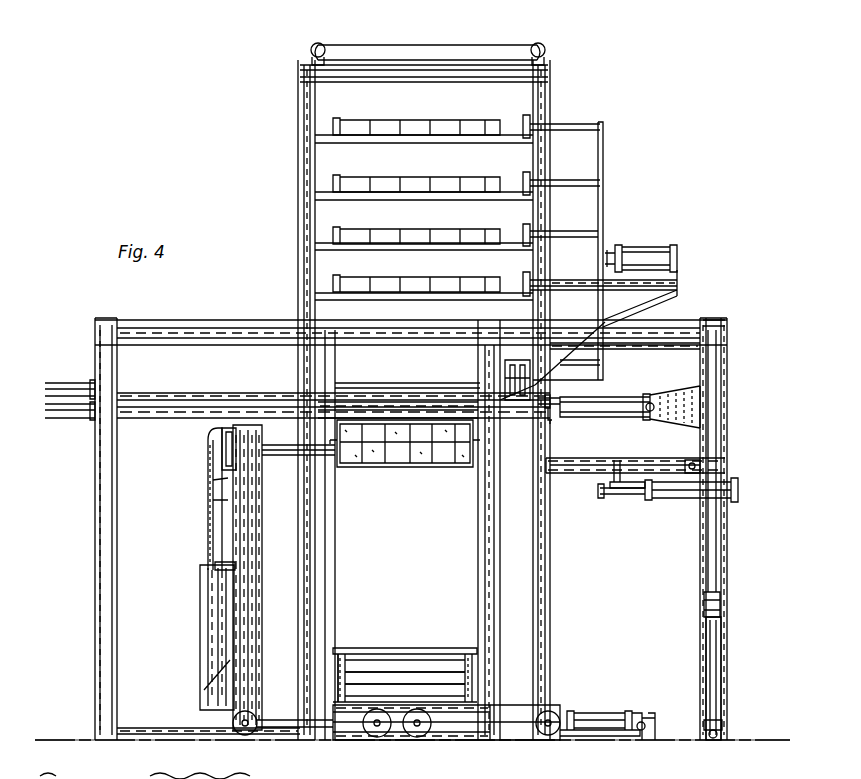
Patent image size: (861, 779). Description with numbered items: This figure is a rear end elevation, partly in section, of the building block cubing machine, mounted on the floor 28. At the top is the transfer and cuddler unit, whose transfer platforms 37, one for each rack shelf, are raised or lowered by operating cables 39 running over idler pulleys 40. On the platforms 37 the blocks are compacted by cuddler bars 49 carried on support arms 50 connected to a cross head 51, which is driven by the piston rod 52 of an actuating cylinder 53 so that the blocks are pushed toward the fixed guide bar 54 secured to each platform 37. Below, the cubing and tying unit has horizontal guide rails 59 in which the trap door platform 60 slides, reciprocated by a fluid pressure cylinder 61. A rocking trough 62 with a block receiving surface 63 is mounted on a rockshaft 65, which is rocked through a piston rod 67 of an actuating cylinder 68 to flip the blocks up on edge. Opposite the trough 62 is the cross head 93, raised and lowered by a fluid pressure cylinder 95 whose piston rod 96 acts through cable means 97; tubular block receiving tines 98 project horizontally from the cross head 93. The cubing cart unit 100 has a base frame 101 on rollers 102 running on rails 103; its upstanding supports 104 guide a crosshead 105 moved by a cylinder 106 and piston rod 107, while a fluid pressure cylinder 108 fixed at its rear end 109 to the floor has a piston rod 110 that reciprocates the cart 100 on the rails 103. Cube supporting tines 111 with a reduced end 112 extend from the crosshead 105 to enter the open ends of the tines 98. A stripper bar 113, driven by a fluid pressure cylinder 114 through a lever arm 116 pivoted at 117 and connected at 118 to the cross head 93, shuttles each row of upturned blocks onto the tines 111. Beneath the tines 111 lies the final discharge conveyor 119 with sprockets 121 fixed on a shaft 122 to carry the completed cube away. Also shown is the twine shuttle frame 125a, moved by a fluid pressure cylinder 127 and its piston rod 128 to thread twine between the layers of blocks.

The floor 28 is at (66, 738).
The transfer platforms 37 is at (420, 152).
The operating cables 39 is at (430, 45).
The idler pulleys 40 is at (316, 52).
The cuddler bars 49 is at (522, 156).
The support arms 50 is at (558, 128).
The cross head 51 is at (604, 128).
The piston rod 52 is at (608, 252).
The actuating cylinder 53 is at (646, 248).
The fixed guide bar 54 is at (314, 154).
The horizontal guide rails 59 is at (222, 362).
The trap door platform 60 is at (402, 394).
The fluid pressure cylinder 61 is at (56, 382).
The rocking trough 62 is at (531, 396).
The block receiving surface 63 is at (190, 774).
The rockshaft 65 is at (548, 396).
The piston rod 67 is at (552, 416).
The actuating cylinder 68 is at (618, 408).
The cross head 93 is at (724, 361).
The fluid pressure cylinder 95 is at (738, 678).
The piston rod 96 is at (739, 604).
The cable means 97 is at (742, 461).
The block receiving tines 98 is at (618, 360).
The cubing cart unit 100 is at (240, 528).
The base frame 101 is at (292, 726).
The rollers 102 is at (248, 736).
The rails 103 is at (178, 734).
The upstanding supports 104 is at (216, 560).
The crosshead 105 is at (208, 482).
The cylinder 106 is at (205, 633).
The piston rod 107 is at (214, 500).
The fluid pressure cylinder 108 is at (598, 710).
The rear end 109 is at (640, 718).
The piston rod 110 is at (448, 734).
The cube supporting tines 111 is at (280, 446).
The reduced end 112 is at (479, 464).
The stripper bar 113 is at (726, 453).
The fluid pressure cylinder 114 is at (672, 496).
The lever arm 116 is at (598, 488).
The pivot 117 is at (614, 464).
The connection 118 is at (692, 462).
The final discharge conveyor 119 is at (398, 640).
The sprockets 121 is at (354, 648).
The shaft 122 is at (430, 670).
The twine shuttle frame 125a is at (392, 378).
The fluid pressure cylinder 127 is at (70, 412).
The piston rod 128 is at (200, 418).